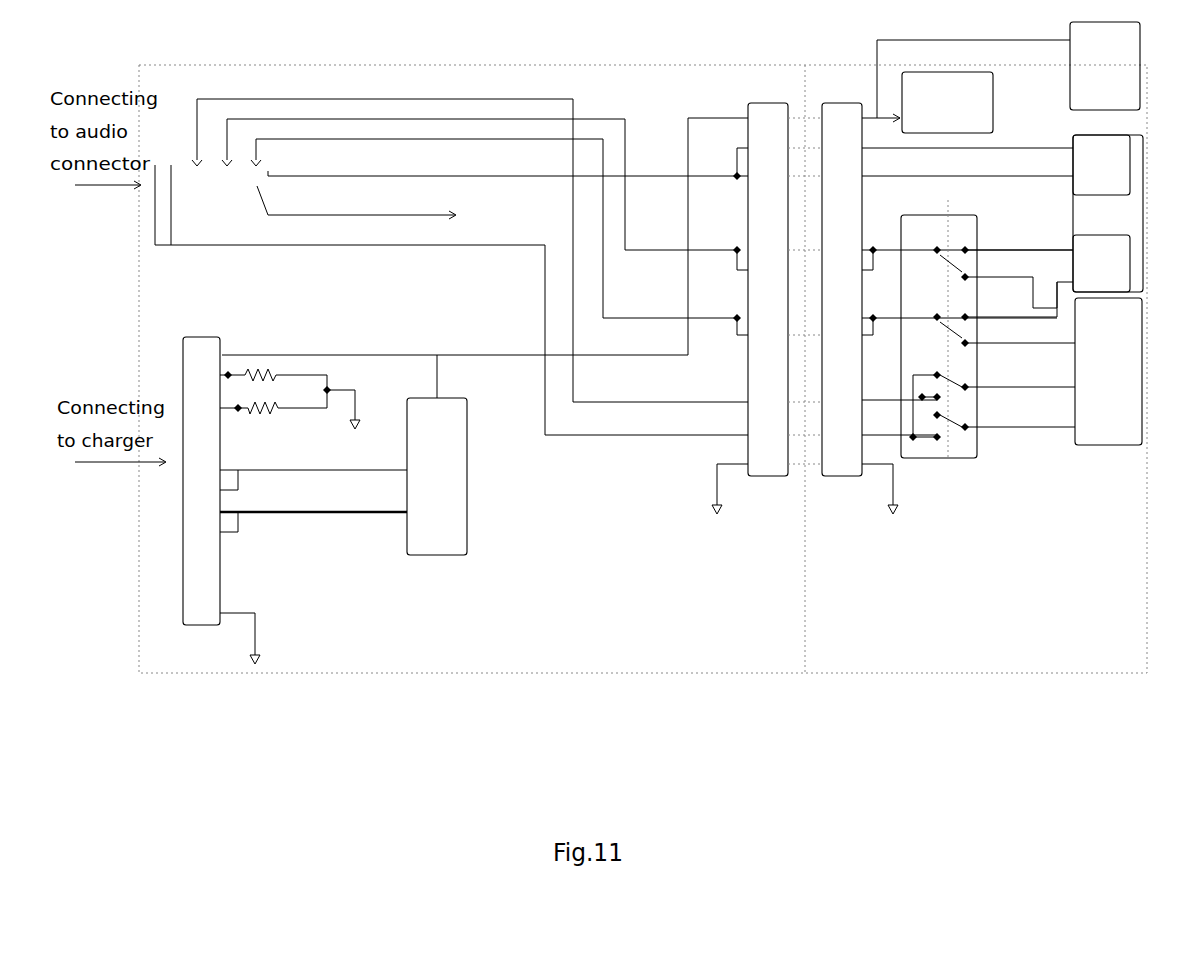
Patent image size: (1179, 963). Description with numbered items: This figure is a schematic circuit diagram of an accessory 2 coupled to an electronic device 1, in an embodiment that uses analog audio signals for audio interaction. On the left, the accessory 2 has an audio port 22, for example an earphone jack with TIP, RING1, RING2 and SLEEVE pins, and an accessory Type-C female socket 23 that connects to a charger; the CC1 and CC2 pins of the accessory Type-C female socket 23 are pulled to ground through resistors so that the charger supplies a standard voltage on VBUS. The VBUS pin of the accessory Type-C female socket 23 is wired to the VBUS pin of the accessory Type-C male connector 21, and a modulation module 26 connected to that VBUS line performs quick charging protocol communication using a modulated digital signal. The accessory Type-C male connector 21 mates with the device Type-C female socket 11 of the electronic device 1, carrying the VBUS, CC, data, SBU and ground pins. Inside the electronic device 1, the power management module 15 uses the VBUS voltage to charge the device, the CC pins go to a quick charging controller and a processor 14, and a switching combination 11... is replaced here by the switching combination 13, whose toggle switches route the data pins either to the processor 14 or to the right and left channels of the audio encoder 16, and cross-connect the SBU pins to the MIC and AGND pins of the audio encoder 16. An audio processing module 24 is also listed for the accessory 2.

The electronic device 1 is at (1016, 571).
The accessory 2 is at (587, 571).
The device Type-C female socket 11 is at (955, 458).
The switching combination 13 is at (994, 114).
The processor 14 is at (1140, 198).
The power management module 15 is at (1140, 50).
The audio encoder 16 is at (1105, 450).
The accessory Type-C male connector 21 is at (826, 103).
The audio port 22 is at (765, 103).
The accessory Type-C female socket 23 is at (193, 246).
The audio processing module 24 is at (178, 535).
The modulation module 26 is at (472, 532).